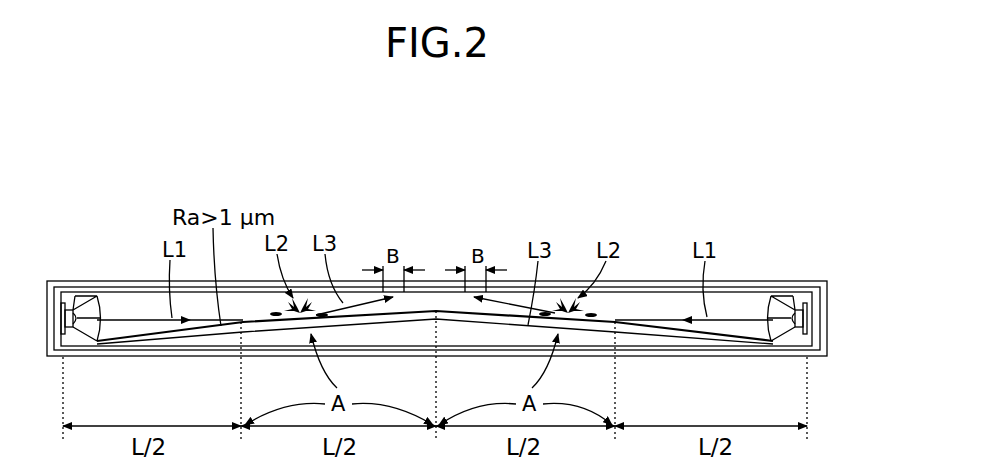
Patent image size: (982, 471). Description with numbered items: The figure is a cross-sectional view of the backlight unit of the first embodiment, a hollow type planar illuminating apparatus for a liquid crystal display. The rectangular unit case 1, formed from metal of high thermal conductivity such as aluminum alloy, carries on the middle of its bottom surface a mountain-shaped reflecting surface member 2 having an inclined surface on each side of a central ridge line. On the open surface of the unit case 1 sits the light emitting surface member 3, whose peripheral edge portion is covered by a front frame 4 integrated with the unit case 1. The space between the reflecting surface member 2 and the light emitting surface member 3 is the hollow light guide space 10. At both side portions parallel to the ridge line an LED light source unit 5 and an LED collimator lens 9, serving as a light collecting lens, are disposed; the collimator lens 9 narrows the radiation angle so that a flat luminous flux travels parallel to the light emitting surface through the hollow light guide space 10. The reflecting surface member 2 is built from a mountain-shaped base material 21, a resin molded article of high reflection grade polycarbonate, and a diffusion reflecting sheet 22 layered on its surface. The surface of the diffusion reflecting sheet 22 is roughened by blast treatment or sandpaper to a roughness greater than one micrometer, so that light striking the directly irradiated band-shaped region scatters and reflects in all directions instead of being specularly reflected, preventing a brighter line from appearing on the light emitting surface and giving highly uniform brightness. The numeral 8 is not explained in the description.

The unit case 1 is at (130, 357).
The reflecting surface member 2 is at (497, 316).
The light emitting surface member 3 is at (673, 290).
The front frame 4 is at (72, 284).
The LED light source unit 5 is at (66, 318).
The substrate 8 is at (75, 357).
The LED collimator lens 9 is at (100, 295).
The hollow light guide space 10 is at (133, 310).
The mountain-shaped base material 21 is at (564, 297).
The diffusion reflecting sheet 22 is at (312, 299).